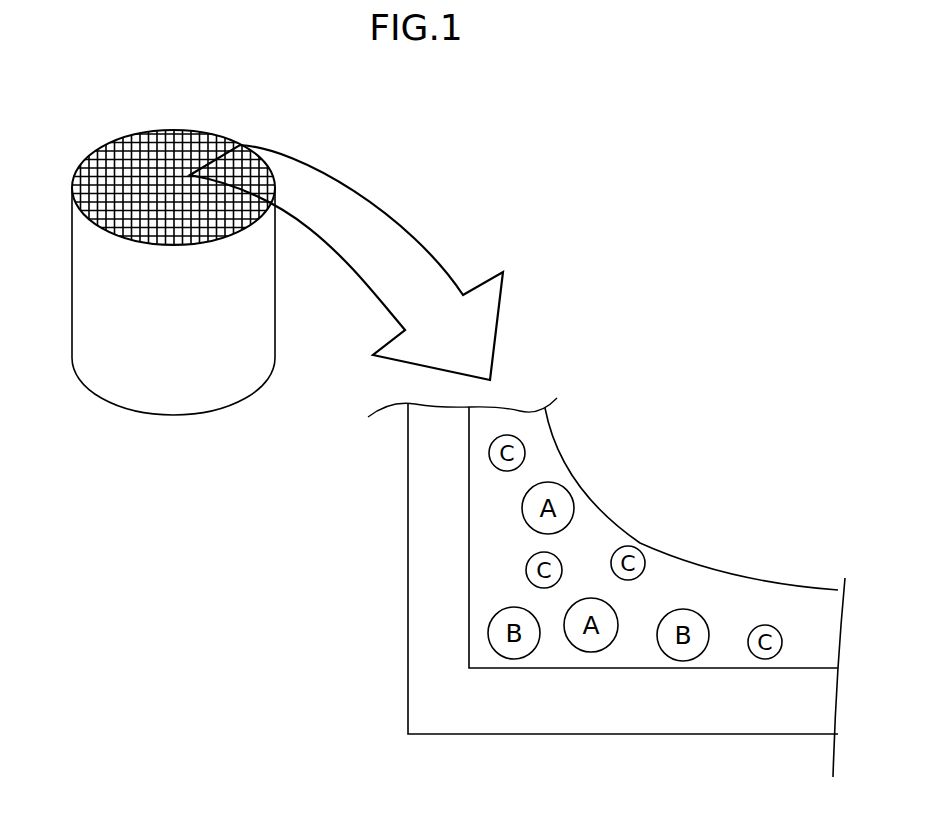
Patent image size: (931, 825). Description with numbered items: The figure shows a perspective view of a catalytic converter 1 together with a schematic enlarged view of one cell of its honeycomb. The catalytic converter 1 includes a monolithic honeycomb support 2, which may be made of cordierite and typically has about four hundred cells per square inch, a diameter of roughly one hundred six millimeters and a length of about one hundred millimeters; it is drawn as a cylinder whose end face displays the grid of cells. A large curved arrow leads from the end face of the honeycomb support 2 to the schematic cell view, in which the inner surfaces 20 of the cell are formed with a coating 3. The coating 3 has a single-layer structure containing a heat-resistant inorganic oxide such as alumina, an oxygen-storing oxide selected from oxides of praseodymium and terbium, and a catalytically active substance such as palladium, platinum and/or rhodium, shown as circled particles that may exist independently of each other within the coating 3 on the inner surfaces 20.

The catalytic converter 1 is at (88, 140).
The monolithic honeycomb support 2 is at (219, 330).
The coating 3 is at (618, 526).
The inner surfaces 20 is at (537, 665).